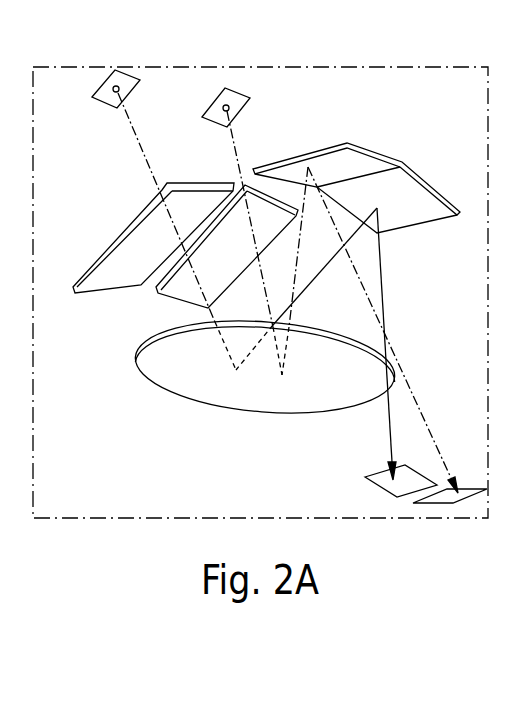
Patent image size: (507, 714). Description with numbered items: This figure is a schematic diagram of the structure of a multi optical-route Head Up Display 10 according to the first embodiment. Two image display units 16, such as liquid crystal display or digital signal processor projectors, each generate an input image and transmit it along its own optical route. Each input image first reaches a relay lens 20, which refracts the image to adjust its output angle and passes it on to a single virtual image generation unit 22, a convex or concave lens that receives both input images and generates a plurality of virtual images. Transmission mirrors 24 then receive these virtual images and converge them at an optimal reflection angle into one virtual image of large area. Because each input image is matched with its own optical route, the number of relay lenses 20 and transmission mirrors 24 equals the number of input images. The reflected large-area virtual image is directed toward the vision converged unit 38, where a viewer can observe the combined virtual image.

The multi optical-route Head Up Display 10 is at (123, 418).
The image display unit 16 is at (100, 96).
The relay lens 20 is at (112, 277).
The virtual image generation unit 22 is at (241, 403).
The transmission mirror 24 is at (347, 143).
The vision converged unit 38 is at (373, 475).